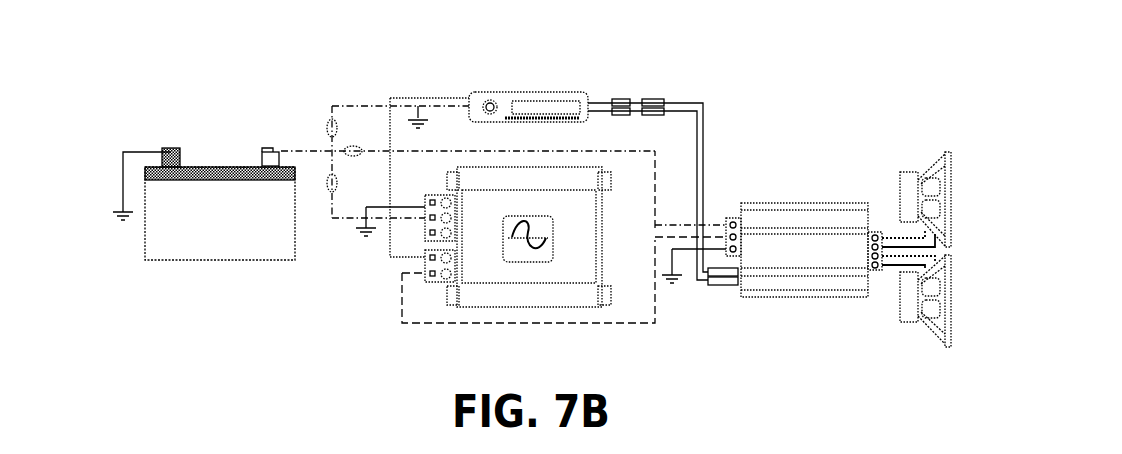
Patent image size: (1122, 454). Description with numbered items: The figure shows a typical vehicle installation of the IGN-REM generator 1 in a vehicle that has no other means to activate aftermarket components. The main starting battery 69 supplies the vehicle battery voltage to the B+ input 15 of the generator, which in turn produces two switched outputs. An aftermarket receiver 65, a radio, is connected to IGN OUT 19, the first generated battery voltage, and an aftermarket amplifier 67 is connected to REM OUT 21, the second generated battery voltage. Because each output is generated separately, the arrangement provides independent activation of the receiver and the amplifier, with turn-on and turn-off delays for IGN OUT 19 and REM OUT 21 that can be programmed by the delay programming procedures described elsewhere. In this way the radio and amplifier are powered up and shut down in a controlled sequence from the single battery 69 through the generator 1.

The IGN-REM generator 1 is at (443, 304).
The B+ input 15 is at (332, 223).
The IGN OUT 19 is at (388, 259).
The REM OUT 21 is at (641, 328).
The aftermarket receiver 65 is at (518, 90).
The aftermarket amplifier 67 is at (803, 206).
The main starting battery 69 is at (222, 163).